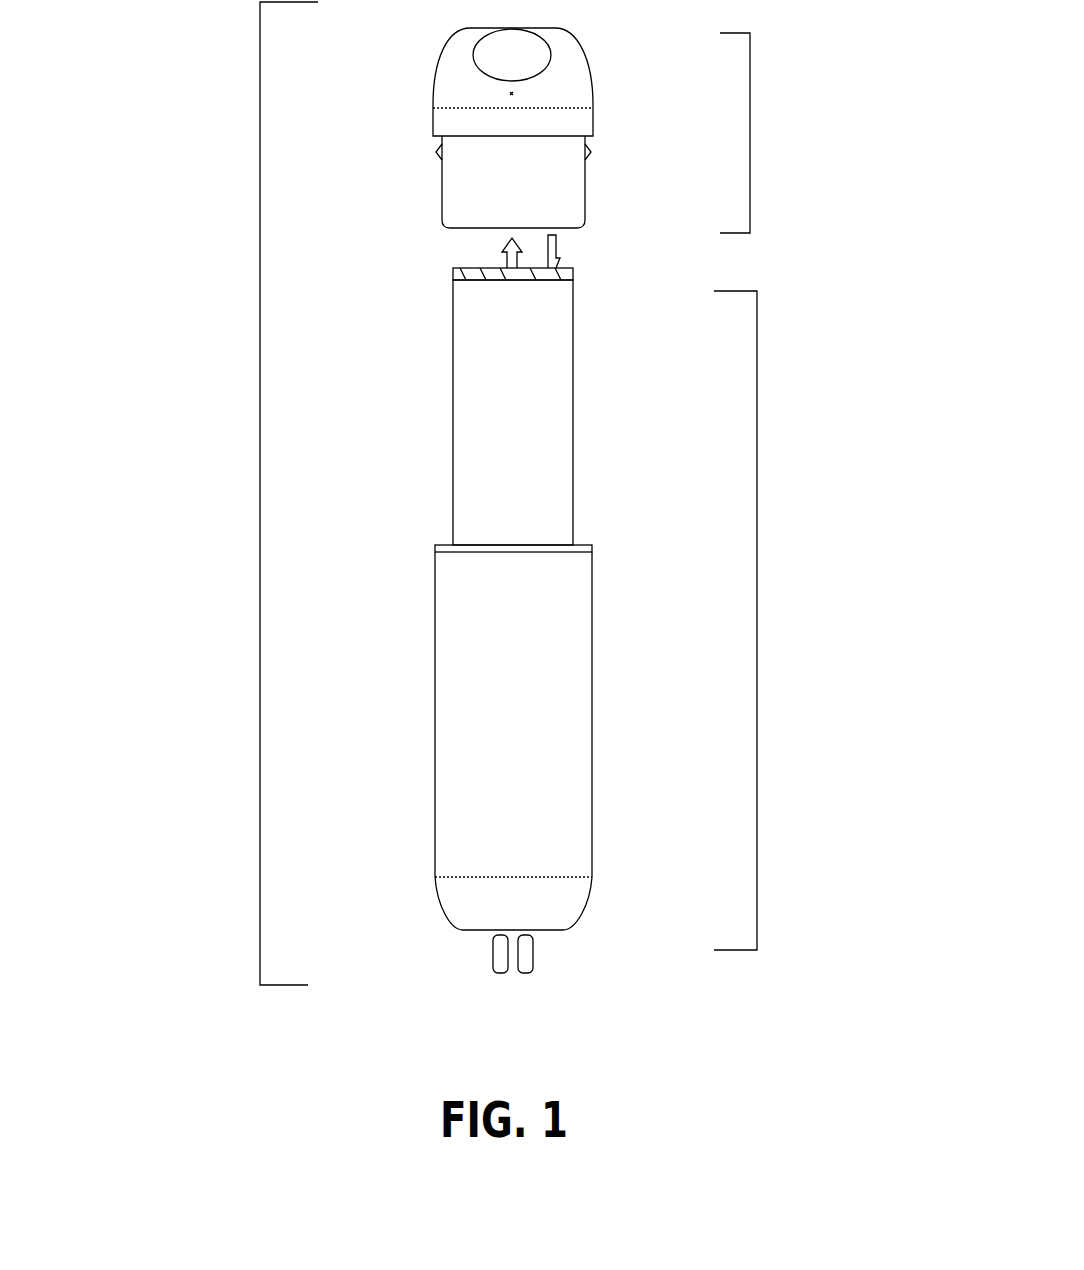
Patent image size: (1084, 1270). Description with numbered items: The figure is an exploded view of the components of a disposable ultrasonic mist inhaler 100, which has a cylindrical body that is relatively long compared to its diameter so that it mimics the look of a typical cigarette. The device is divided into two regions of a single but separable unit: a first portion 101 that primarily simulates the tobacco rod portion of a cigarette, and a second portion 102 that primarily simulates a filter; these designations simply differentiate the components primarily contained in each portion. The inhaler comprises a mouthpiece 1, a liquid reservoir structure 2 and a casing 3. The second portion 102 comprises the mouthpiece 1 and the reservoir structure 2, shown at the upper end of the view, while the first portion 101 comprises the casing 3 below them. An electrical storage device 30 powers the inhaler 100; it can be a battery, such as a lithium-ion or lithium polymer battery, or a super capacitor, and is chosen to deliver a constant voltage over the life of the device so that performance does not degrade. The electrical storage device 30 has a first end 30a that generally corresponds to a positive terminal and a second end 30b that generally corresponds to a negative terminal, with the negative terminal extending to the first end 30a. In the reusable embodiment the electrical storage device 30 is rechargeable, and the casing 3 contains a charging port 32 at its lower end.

The ultrasonic mist inhaler 100 is at (258, 113).
The first portion 101 is at (757, 617).
The second portion 102 is at (750, 135).
The mouthpiece 1 is at (418, 68).
The liquid reservoir structure 2 is at (409, 138).
The casing 3 is at (418, 757).
The electrical storage device 30 is at (419, 443).
The first end 30a is at (433, 270).
The second end 30b is at (436, 522).
The charging port 32 is at (490, 948).